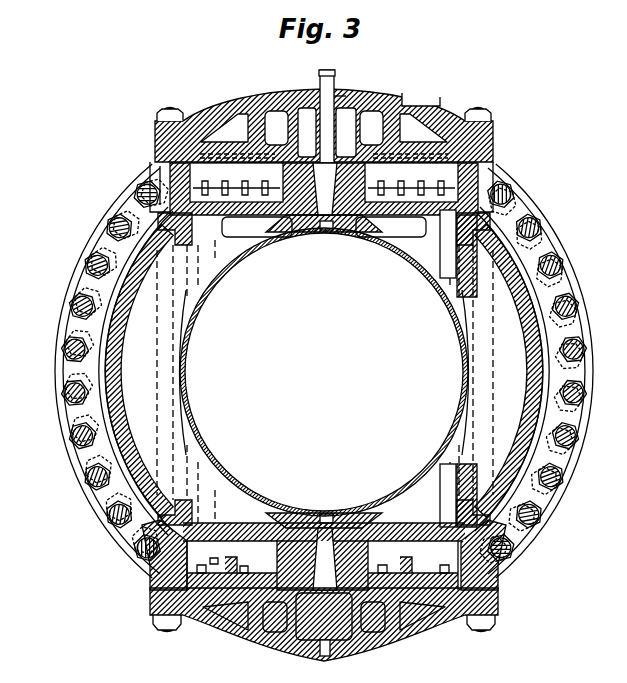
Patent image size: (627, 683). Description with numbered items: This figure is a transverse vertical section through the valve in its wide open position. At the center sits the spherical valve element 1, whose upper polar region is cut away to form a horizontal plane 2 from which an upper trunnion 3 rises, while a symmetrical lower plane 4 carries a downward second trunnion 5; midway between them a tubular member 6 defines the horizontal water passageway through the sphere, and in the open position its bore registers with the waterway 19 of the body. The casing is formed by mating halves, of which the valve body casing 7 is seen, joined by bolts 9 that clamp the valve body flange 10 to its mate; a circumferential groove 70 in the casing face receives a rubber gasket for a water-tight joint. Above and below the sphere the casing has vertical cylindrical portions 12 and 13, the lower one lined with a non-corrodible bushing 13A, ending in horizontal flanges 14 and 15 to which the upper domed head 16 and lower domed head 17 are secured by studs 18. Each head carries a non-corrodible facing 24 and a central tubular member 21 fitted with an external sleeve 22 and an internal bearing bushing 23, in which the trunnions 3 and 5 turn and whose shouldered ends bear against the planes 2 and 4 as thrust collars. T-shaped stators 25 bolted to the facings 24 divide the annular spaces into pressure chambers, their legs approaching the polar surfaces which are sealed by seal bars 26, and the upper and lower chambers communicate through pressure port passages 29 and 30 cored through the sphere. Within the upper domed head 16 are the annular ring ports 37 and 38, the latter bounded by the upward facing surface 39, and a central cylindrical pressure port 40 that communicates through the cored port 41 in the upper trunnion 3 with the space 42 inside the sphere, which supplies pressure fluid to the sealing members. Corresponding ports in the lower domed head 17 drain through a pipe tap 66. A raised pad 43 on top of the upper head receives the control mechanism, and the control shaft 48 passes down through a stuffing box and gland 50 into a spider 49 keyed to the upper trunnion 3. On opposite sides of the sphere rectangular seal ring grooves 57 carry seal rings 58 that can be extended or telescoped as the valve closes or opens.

The spherical valve element 1 is at (112, 371).
The horizontal plane 2 is at (276, 216).
The trunnion 3 is at (334, 232).
The second horizontal plane 4 is at (222, 532).
The second trunnion 5 is at (356, 556).
The tubular member 6 is at (184, 360).
The valve body casing half 7 is at (82, 290).
The bolts 9 is at (80, 420).
The valve body flange 10 is at (62, 327).
The upper cylindrical portion 12 is at (166, 172).
The lower cylindrical portion 13 is at (188, 552).
The cylindrical bushing 13A is at (158, 594).
The upper horizontal flange 14 is at (490, 162).
The lower horizontal flange 15 is at (152, 590).
The upper domed head 16 is at (268, 104).
The lower domed head 17 is at (192, 628).
The studs 18 is at (170, 110).
The waterway 19 is at (342, 300).
The tubular member 21 is at (308, 233).
The sleeve 22 is at (296, 232).
The bearing bushing 23 is at (324, 231).
The metal facing 24 is at (241, 566).
The T-shaped stator 25 is at (414, 556).
The seal bar 26 is at (324, 197).
The pressure port passage 29 is at (448, 278).
The pressure port passage 30 is at (204, 287).
The annular ring port 37 is at (324, 371).
The annular ring port 38 is at (324, 372).
The upward facing surface 39 is at (226, 120).
The cylindrical pressure port 40 is at (326, 374).
The cored port 41 is at (313, 341).
The interior space 42 is at (356, 242).
The raised pad 43 is at (396, 96).
The control shaft 48 is at (335, 78).
The spider 49 is at (306, 141).
The stuffing box and gland 50 is at (341, 95).
The seal ring groove 57 is at (165, 252).
The seal ring 58 is at (135, 206).
The pipe tap 66 is at (324, 657).
The circumferential groove 70 is at (100, 450).